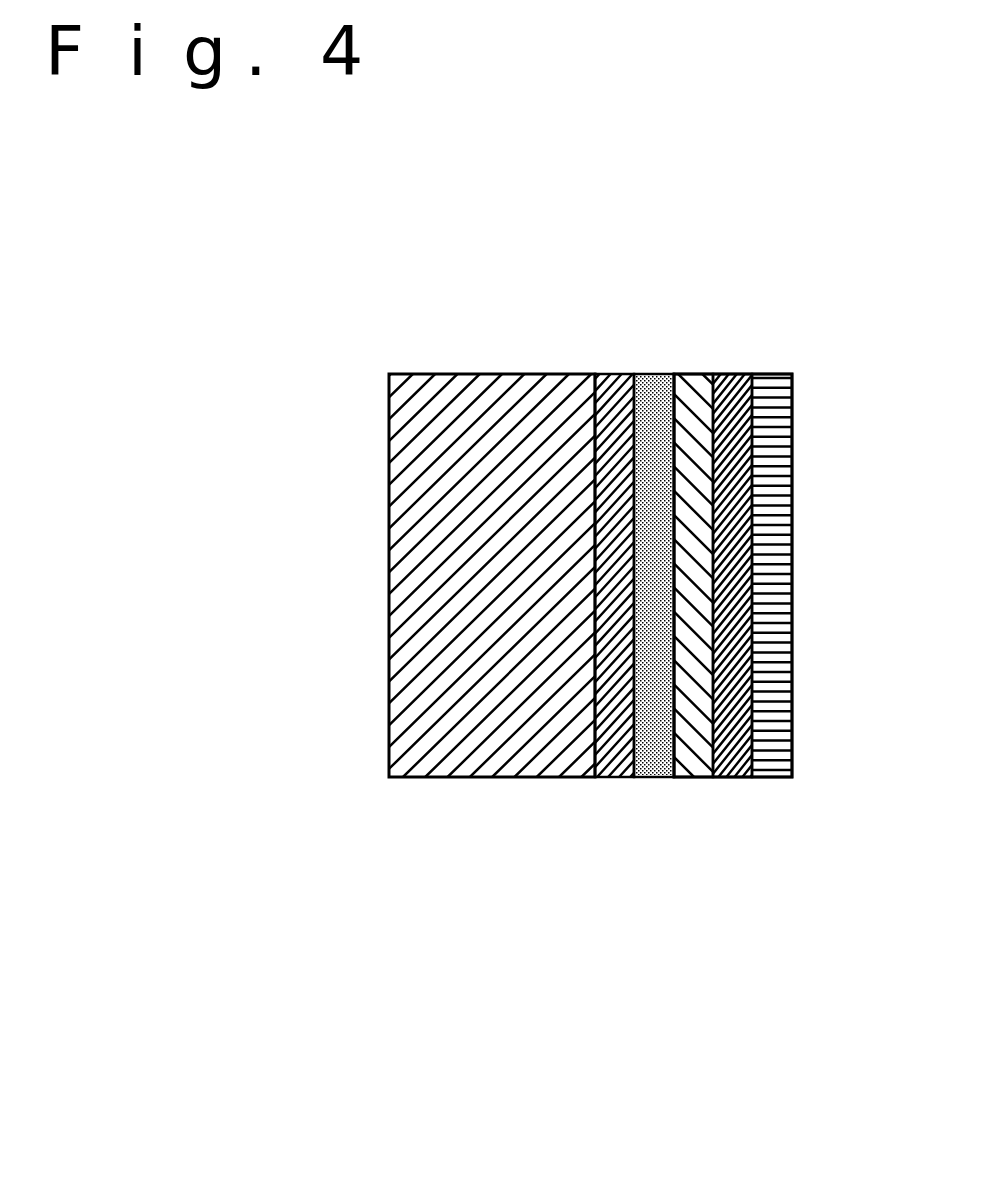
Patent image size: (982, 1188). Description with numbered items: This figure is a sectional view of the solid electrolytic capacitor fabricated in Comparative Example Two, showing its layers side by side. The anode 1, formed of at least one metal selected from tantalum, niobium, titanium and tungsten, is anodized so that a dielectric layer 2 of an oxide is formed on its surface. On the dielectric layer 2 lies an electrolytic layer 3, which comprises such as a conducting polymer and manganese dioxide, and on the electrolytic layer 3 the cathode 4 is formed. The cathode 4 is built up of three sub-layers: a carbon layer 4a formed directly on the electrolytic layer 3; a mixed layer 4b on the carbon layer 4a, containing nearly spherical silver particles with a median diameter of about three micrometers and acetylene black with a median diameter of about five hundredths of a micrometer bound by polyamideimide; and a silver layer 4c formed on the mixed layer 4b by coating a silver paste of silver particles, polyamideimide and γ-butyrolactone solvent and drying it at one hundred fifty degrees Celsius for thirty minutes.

The anode 1 is at (476, 777).
The dielectric layer 2 is at (619, 777).
The electrolytic layer 3 is at (662, 777).
The cathode 4 is at (636, 693).
The carbon layer 4a is at (693, 777).
The mixed layer 4b is at (737, 777).
The silver layer 4c is at (770, 777).